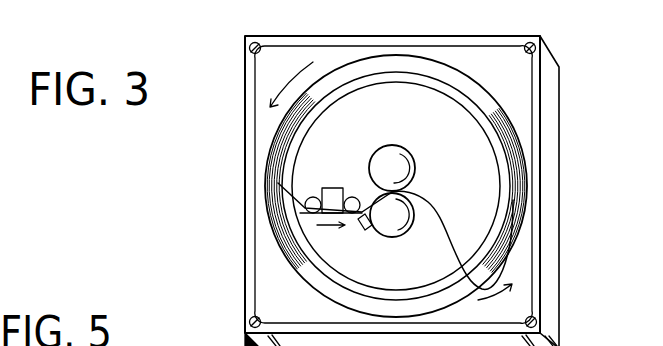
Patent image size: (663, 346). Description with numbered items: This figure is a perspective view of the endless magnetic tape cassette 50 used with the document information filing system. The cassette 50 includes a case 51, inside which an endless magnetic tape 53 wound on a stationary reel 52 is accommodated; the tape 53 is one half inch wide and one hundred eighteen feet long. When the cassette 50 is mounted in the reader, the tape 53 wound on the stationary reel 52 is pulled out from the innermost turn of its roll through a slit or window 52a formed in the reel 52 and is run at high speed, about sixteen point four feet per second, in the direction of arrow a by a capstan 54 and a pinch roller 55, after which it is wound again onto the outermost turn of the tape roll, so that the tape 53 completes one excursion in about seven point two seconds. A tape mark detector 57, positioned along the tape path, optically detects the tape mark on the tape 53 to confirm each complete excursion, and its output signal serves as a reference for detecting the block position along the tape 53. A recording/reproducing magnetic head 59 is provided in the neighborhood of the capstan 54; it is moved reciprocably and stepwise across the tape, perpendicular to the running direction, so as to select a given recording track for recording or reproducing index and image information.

The endless magnetic tape cassette 50 is at (335, 35).
The case 51 is at (455, 36).
The stationary reel 52 is at (482, 128).
The slit or window 52a is at (273, 193).
The endless magnetic tape 53 is at (267, 141).
The capstan 54 is at (393, 145).
The pinch roller 55 is at (392, 238).
The tape mark detector 57 is at (364, 229).
The magnetic head 59 is at (331, 188).